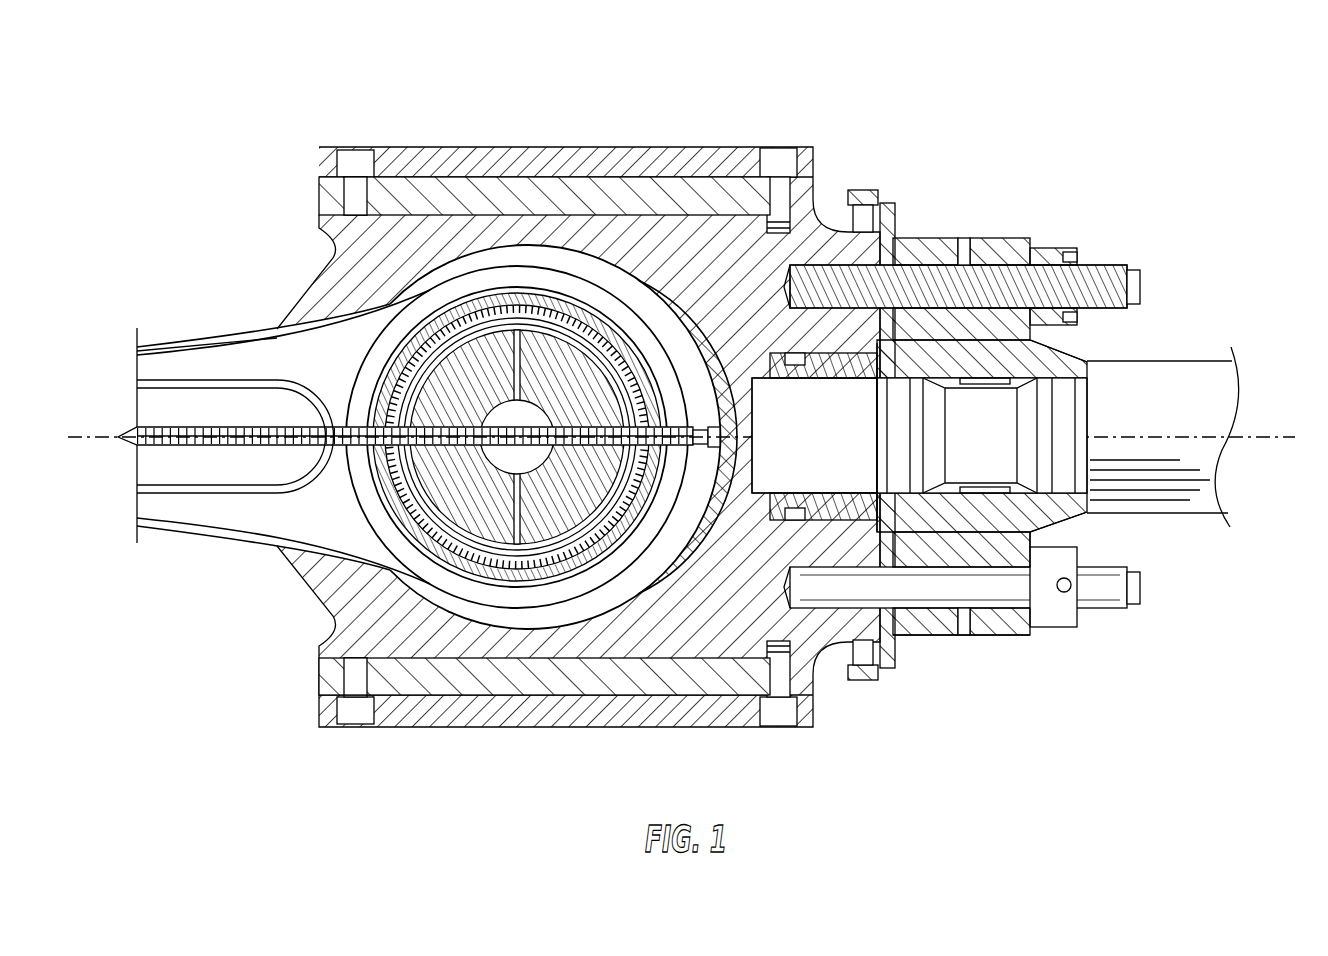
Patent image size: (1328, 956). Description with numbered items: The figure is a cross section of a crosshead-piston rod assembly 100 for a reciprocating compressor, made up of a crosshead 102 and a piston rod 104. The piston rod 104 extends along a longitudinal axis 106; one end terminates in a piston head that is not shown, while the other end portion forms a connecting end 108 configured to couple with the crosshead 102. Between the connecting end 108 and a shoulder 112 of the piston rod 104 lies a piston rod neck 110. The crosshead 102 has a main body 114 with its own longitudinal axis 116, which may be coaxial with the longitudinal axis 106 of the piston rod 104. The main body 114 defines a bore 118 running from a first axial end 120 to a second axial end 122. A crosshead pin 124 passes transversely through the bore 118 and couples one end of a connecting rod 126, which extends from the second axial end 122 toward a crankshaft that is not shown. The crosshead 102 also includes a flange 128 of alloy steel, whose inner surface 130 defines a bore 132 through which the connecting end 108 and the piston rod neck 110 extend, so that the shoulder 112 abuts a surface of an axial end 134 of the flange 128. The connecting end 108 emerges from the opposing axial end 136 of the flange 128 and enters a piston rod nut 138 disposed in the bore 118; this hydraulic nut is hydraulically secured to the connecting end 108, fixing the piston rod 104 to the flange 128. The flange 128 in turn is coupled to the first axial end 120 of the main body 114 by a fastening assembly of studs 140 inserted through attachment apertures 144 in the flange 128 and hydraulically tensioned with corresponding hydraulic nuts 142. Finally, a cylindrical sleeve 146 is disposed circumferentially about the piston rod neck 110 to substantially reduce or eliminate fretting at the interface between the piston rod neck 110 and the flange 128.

The crosshead-piston rod assembly 100 is at (193, 100).
The crosshead 102 is at (609, 141).
The piston rod 104 is at (1194, 355).
The longitudinal axis 106 is at (1265, 433).
The connecting end 108 is at (754, 508).
The piston rod neck 110 is at (941, 500).
The shoulder 112 is at (1087, 515).
The main body 114 is at (665, 200).
The longitudinal axis 116 is at (82, 436).
The bore 118 is at (338, 591).
The first axial end 120 is at (834, 208).
The second axial end 122 is at (298, 270).
The crosshead pin 124 is at (538, 431).
The connecting rod 126 is at (230, 360).
The flange 128 is at (985, 620).
The inner surface 130 is at (1090, 364).
The bore 132 is at (1092, 487).
The axial end 134 is at (1070, 342).
The opposing axial end 136 is at (866, 508).
The piston rod nut 138 is at (845, 370).
The studs 140 is at (1098, 262).
The hydraulic nuts 142 is at (1045, 248).
The attachment apertures 144 is at (912, 252).
The cylindrical sleeve 146 is at (972, 500).